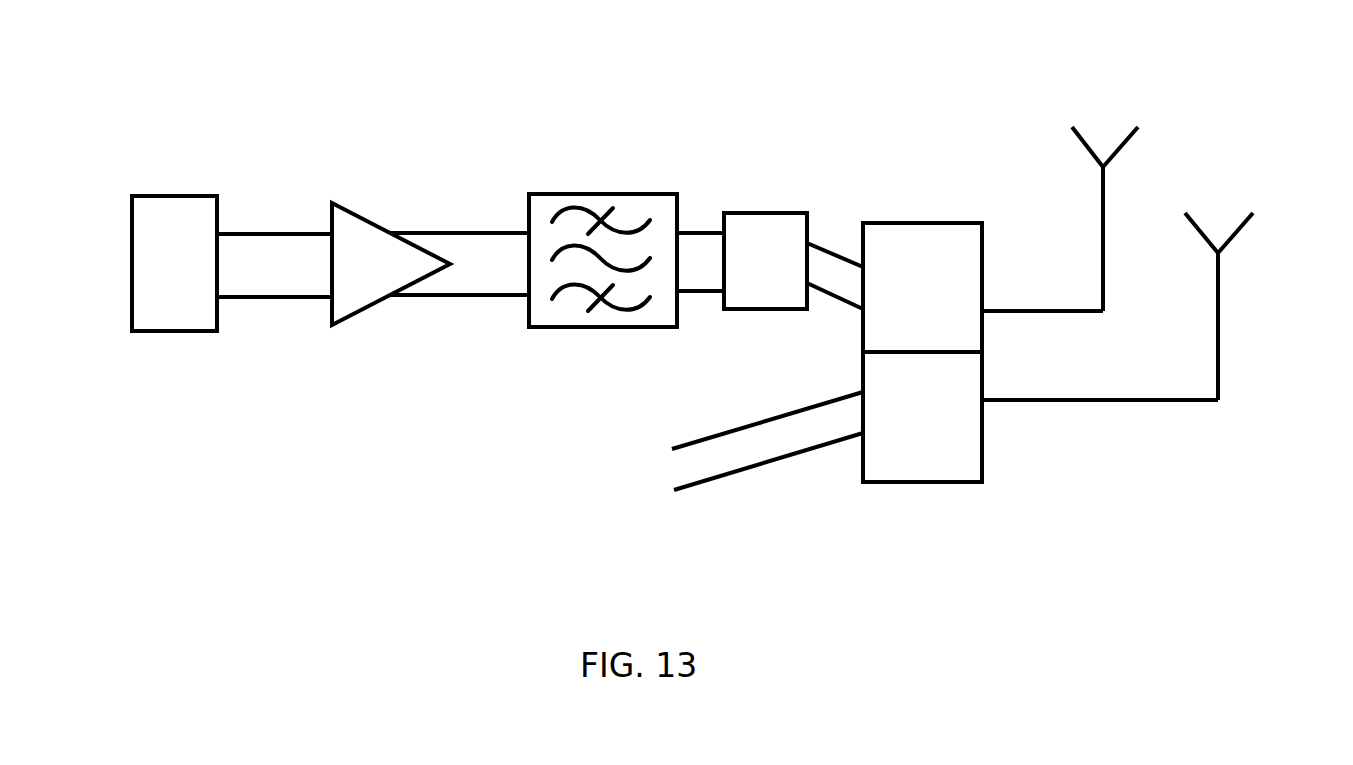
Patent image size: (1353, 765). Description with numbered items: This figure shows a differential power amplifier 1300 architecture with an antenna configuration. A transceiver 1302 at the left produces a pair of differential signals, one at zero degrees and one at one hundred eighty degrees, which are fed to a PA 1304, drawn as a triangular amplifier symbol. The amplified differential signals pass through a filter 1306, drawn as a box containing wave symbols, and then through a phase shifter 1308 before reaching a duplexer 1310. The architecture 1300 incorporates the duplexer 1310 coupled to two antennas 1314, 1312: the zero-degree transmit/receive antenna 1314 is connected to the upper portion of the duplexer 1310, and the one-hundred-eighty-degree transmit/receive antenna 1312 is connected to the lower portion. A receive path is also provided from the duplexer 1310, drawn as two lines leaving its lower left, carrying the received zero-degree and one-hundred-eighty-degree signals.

The differential power amplifier 1300 is at (178, 80).
The transceiver 1302 is at (160, 331).
The PA 1304 is at (362, 148).
The filter 1306 is at (595, 190).
The phase shifter 1308 is at (763, 212).
The duplexer 1310 is at (898, 482).
The antenna 1312 is at (1141, 345).
The antenna 1314 is at (1052, 181).